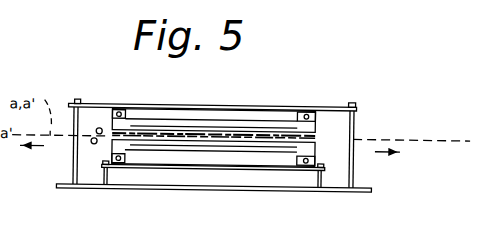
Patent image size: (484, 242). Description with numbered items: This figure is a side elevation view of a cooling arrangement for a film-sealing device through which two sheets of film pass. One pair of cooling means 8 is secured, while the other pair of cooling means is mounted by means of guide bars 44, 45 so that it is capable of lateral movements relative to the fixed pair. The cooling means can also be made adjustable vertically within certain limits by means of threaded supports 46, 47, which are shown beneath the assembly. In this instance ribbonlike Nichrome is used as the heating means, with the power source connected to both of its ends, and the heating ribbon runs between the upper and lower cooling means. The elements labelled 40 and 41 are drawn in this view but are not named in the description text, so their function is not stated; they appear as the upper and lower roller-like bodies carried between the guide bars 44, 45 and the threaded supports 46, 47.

The cooling means 8 is at (156, 124).
The upper roller assembly 40 is at (243, 131).
The lower roller assembly 41 is at (247, 147).
The guide bar 44 is at (131, 86).
The guide bar 45 is at (306, 112).
The threaded support 46 is at (112, 182).
The threaded support 47 is at (316, 180).